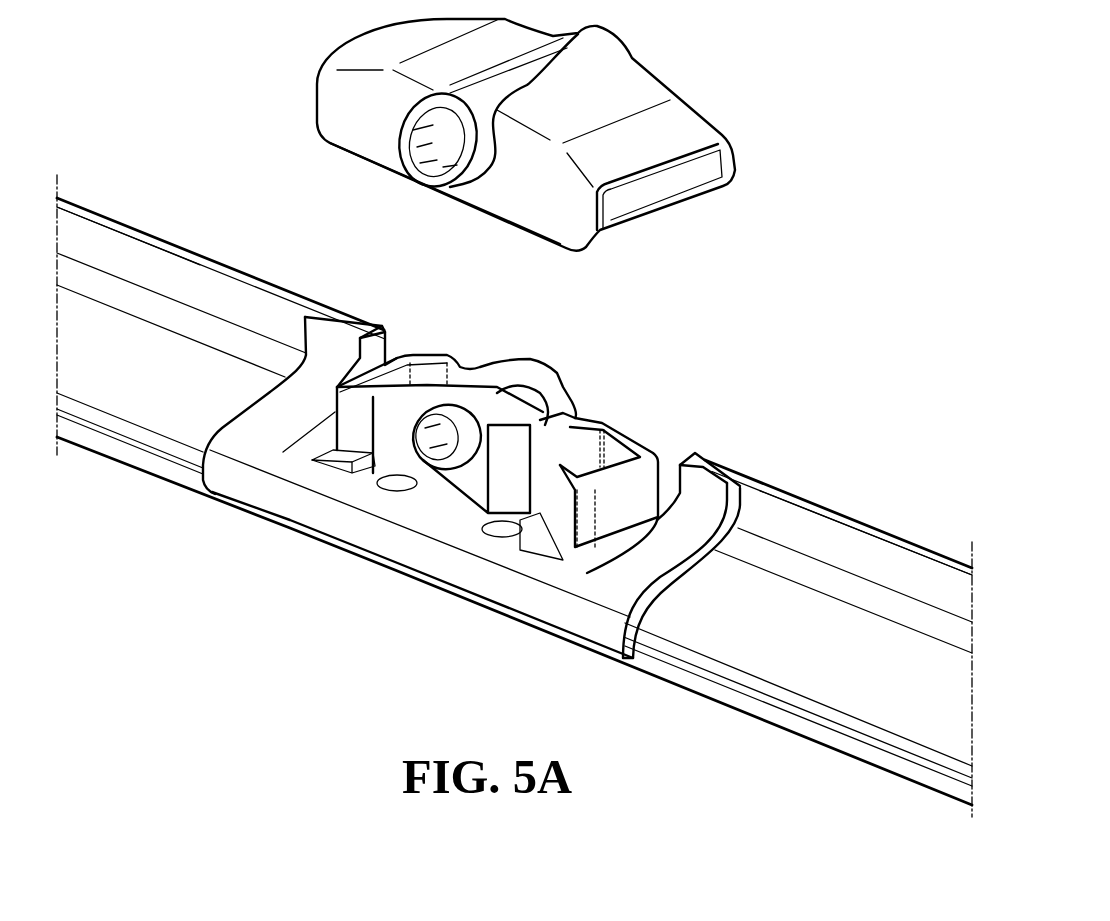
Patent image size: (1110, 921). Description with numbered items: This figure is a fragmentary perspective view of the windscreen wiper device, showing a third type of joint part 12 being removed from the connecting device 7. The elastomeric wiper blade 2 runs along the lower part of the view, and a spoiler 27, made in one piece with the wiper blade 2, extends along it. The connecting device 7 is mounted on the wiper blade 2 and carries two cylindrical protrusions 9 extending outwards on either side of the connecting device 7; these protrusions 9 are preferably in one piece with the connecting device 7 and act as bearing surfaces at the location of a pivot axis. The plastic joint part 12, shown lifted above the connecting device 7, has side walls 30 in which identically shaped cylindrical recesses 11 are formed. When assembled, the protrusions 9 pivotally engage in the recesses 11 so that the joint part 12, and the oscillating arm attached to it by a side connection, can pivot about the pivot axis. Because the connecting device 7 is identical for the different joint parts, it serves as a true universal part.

The wiper blade 2 is at (822, 730).
The spoiler 27 is at (160, 268).
The connecting device 7 is at (643, 405).
The cylindrical protrusions 9 is at (427, 440).
The joint part 12 is at (645, 90).
The cylindrical recesses 11 is at (433, 160).
The side walls 30 is at (520, 194).